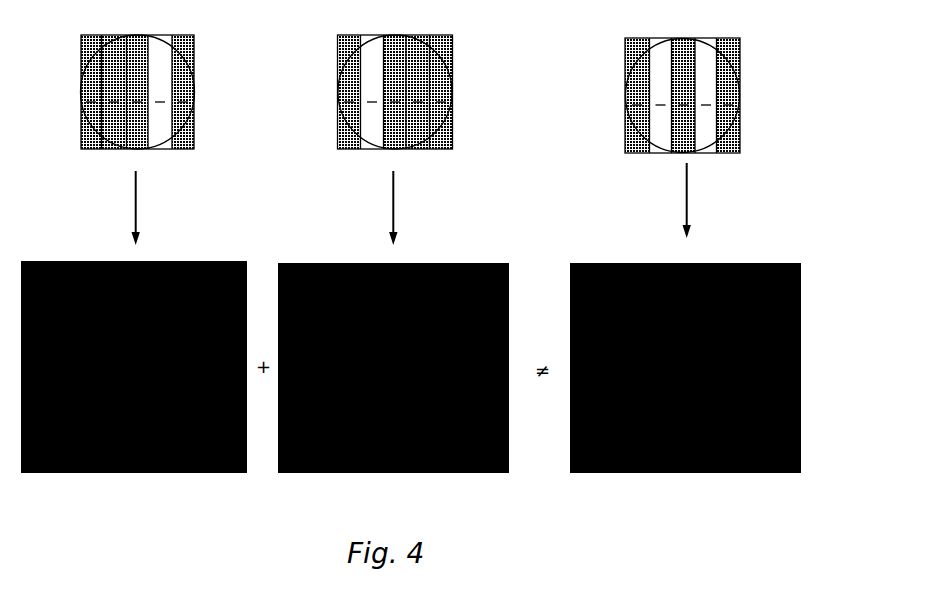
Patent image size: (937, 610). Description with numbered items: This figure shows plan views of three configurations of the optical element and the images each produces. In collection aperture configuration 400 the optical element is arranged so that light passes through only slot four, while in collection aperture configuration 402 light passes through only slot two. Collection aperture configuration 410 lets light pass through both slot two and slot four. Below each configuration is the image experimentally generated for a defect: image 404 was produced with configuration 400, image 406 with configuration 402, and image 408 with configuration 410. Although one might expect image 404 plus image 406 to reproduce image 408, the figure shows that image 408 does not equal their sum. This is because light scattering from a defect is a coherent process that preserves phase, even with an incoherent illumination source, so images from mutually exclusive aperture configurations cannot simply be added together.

The collection aperture configuration 400 is at (197, 57).
The collection aperture configuration 402 is at (455, 62).
The collection aperture configuration 410 is at (743, 66).
The image 404 is at (207, 251).
The image 406 is at (480, 253).
The image 408 is at (747, 252).